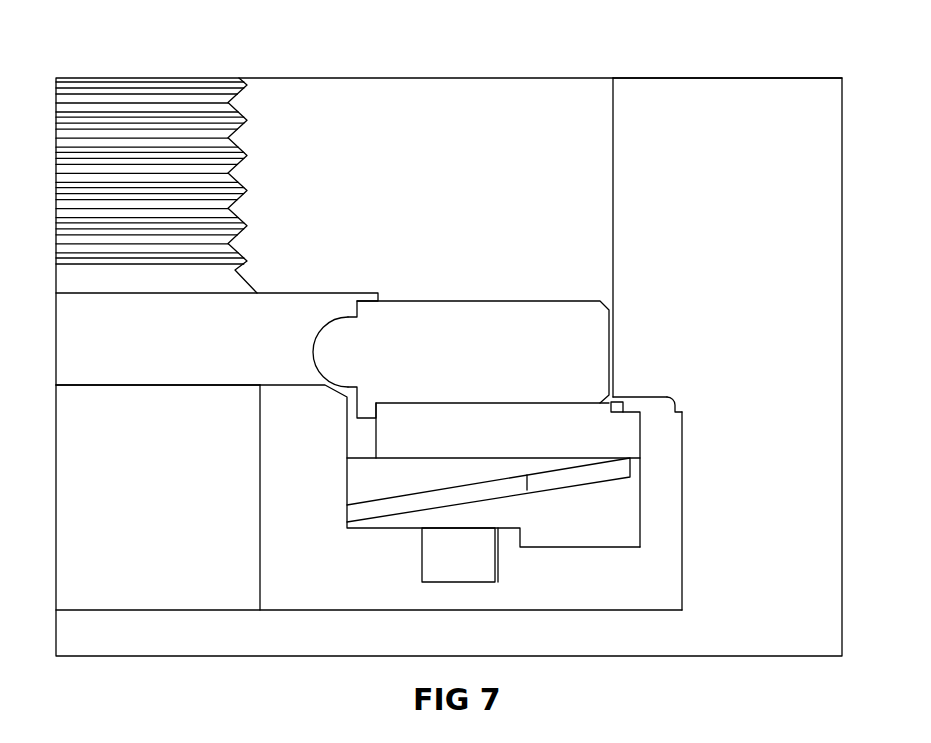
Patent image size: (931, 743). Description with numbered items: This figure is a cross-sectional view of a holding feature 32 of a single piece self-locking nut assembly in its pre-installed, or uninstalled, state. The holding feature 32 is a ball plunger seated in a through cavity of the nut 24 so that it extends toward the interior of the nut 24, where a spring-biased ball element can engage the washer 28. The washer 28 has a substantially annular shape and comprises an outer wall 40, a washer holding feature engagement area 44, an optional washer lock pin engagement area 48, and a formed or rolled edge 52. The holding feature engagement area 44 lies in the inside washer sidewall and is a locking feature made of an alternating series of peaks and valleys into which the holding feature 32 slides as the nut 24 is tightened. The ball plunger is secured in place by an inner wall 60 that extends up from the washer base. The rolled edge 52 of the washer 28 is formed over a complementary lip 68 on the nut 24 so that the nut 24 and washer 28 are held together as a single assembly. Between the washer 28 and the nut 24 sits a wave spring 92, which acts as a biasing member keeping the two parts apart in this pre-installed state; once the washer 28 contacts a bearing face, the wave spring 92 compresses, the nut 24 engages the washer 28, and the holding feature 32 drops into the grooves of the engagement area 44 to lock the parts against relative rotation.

The nut 24 is at (613, 105).
The washer 28 is at (681, 582).
The holding feature 32 is at (590, 342).
The outer wall 40 is at (662, 503).
The washer holding feature engagement area 44 is at (330, 452).
The washer lock pin engagement area 48 is at (517, 600).
The formed or rolled edge 52 is at (638, 403).
The inner wall 60 is at (298, 410).
The complementary lip 68 is at (623, 433).
The wave spring 92 is at (585, 478).